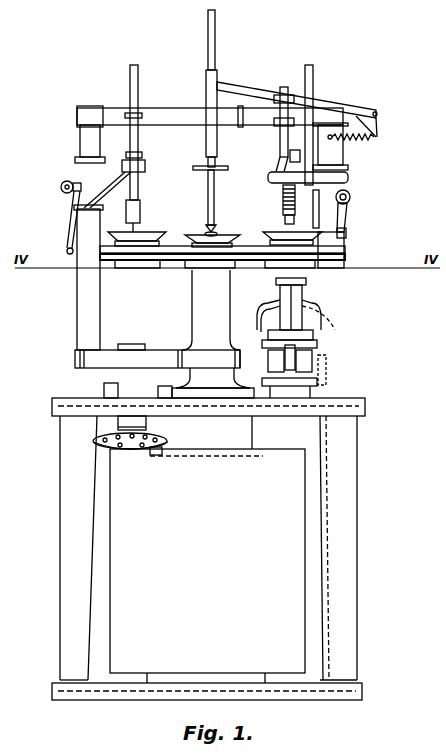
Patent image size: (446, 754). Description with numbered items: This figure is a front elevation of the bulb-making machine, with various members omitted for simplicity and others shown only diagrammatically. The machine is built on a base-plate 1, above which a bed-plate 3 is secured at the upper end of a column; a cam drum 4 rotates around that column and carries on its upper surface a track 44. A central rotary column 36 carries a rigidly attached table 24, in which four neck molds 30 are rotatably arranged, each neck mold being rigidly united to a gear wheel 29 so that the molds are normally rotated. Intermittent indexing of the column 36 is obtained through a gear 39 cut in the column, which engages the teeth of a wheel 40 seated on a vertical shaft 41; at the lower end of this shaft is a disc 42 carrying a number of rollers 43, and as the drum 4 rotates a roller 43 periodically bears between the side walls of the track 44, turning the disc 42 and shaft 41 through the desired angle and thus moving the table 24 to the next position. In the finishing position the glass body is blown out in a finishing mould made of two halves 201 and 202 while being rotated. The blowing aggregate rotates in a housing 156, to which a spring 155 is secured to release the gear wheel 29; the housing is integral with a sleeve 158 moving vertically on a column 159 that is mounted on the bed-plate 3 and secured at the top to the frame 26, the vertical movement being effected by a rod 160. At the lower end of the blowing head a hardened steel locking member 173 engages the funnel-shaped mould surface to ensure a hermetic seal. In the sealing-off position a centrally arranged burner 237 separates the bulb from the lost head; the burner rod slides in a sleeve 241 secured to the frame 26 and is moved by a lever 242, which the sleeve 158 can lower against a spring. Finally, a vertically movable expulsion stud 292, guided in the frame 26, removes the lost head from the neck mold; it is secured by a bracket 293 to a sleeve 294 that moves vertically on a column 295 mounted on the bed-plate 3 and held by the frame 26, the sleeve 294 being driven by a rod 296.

The base-plate 1 is at (101, 692).
The bed-plate 3 is at (63, 398).
The cam drum 4 is at (118, 568).
The table 24 is at (163, 247).
The frame 26 is at (149, 114).
The gear wheel 29 is at (162, 258).
The neck mold 30 is at (140, 234).
The central rotary column 36 is at (203, 311).
The gear 39 is at (241, 361).
The wheel 40 is at (96, 351).
The vertical shaft 41 is at (125, 423).
The disc 42 is at (112, 440).
The roller 43 is at (100, 447).
The track 44 is at (152, 452).
The spring 155 is at (320, 211).
The housing 156 is at (318, 182).
The sleeve 158 is at (322, 212).
The column 159 is at (340, 262).
The rod 160 is at (347, 237).
The locking member 173 is at (284, 212).
The finishing mould half 201 is at (300, 306).
The finishing mould half 202 is at (279, 291).
The burner 237 is at (214, 193).
The sleeve 241 is at (208, 80).
The lever 242 is at (252, 92).
The expulsion stud 292 is at (80, 215).
The bracket 293 is at (120, 165).
The sleeve 294 is at (82, 161).
The column 295 is at (90, 262).
The rod 296 is at (66, 251).